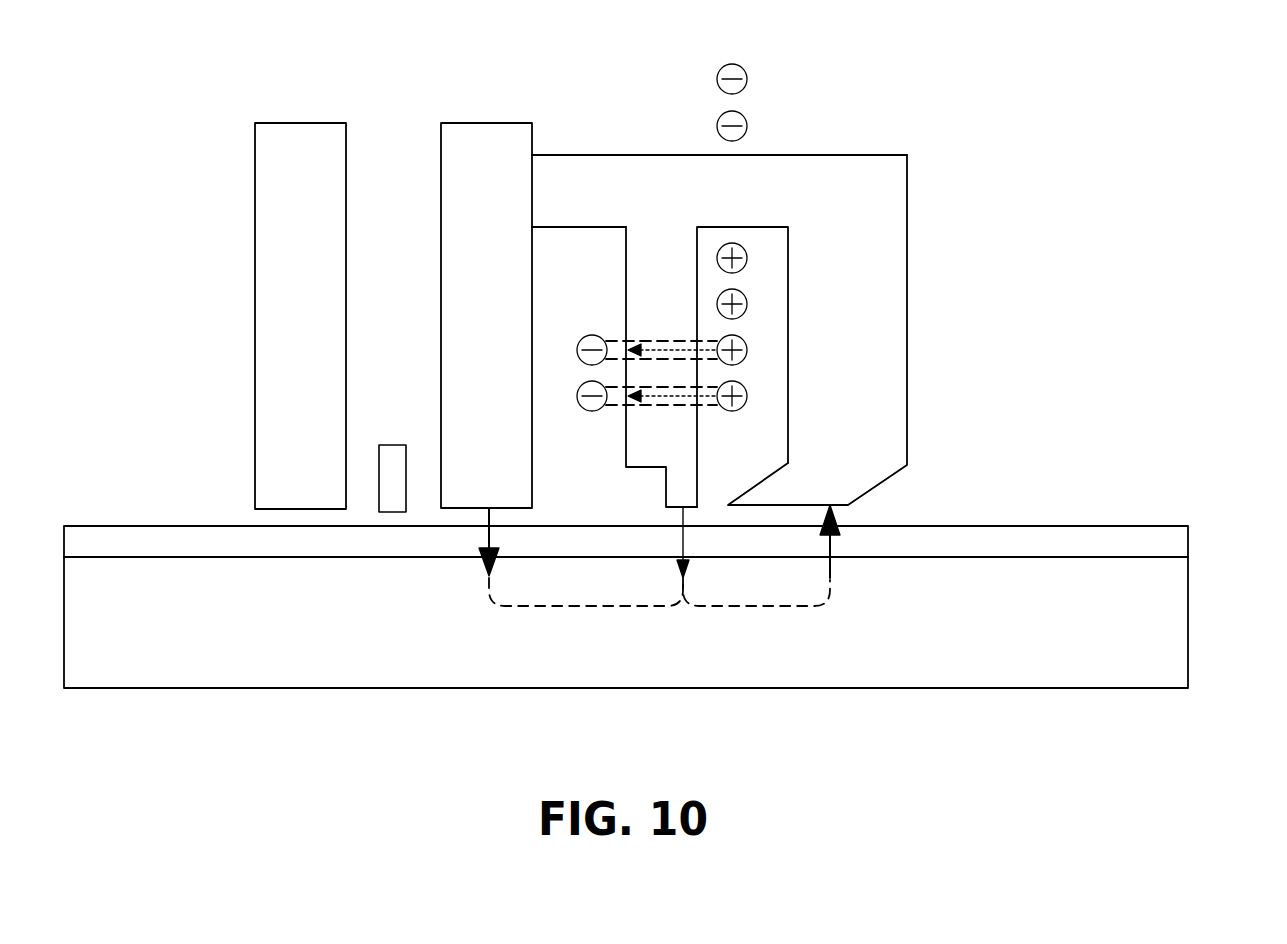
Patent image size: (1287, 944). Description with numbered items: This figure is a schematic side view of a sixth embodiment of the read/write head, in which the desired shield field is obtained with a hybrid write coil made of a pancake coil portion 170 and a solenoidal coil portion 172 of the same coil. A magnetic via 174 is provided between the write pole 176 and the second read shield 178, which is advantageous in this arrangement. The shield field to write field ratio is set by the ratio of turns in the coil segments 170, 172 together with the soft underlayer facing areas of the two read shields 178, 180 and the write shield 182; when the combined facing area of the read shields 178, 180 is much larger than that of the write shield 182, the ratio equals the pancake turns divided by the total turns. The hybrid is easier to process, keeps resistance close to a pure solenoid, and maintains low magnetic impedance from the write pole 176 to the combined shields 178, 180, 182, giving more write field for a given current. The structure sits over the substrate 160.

The substrate 160 is at (1163, 626).
The pancake coil portion 170 is at (745, 68).
The solenoidal coil portion 172 is at (705, 398).
The magnetic via 174 is at (576, 183).
The write pole 176 is at (660, 437).
The second read shield 178 is at (472, 123).
The read shield 180 is at (283, 123).
The write shield 182 is at (888, 288).